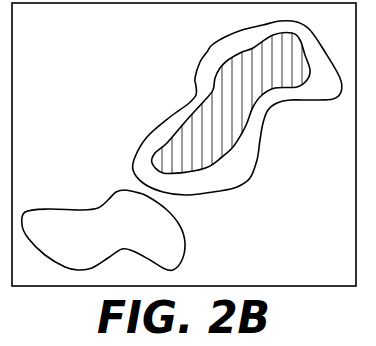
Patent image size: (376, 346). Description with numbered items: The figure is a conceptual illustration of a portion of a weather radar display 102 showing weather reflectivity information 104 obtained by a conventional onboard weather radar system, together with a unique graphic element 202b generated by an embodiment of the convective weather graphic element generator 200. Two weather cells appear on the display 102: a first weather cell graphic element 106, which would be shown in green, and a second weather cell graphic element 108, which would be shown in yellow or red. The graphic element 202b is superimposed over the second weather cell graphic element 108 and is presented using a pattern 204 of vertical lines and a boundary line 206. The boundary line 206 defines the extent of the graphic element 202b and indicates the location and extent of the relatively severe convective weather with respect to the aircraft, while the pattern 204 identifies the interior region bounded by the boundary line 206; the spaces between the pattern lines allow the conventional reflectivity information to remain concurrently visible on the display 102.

The weather radar display 102 is at (336, 287).
The weather reflectivity information 104 is at (106, 90).
The first weather cell graphic element 106 is at (184, 243).
The second weather cell graphic element 108 is at (250, 178).
The convective weather graphic element generator 200 is at (68, 302).
The unique graphic element 202b is at (246, 128).
The pattern 204 is at (202, 142).
The boundary line 206 is at (230, 60).